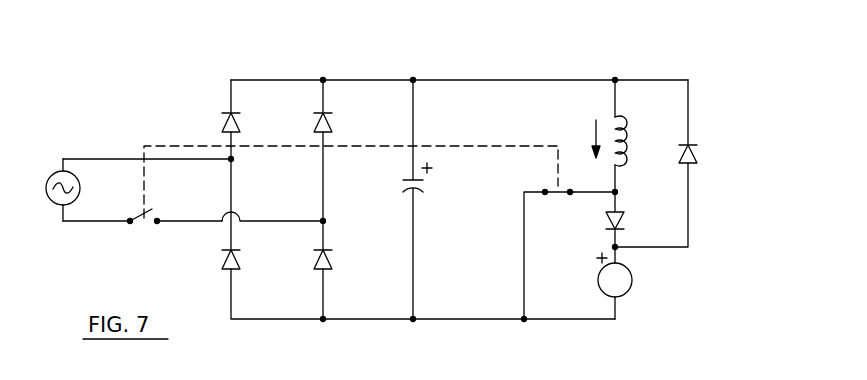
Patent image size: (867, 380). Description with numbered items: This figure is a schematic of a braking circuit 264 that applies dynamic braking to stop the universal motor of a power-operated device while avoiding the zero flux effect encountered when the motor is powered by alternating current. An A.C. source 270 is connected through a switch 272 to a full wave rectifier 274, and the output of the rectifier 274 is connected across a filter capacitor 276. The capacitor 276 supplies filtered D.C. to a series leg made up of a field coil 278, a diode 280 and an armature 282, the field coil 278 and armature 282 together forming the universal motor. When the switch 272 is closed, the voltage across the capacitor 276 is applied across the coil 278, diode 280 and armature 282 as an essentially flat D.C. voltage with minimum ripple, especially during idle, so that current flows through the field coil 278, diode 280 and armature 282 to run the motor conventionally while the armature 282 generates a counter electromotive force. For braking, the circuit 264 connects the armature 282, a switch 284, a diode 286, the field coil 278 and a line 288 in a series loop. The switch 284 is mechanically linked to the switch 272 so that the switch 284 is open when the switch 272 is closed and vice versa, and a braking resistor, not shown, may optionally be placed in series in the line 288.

The braking circuit 264 is at (577, 63).
The A.C. source 270 is at (62, 206).
The switch 272 is at (141, 225).
The full wave rectifier 274 is at (208, 125).
The filter capacitor 276 is at (405, 190).
The field coil 278 is at (620, 115).
The diode 280 is at (626, 221).
The armature 282 is at (632, 280).
The switch 284 is at (557, 198).
The diode 286 is at (695, 155).
The line 288 is at (524, 216).